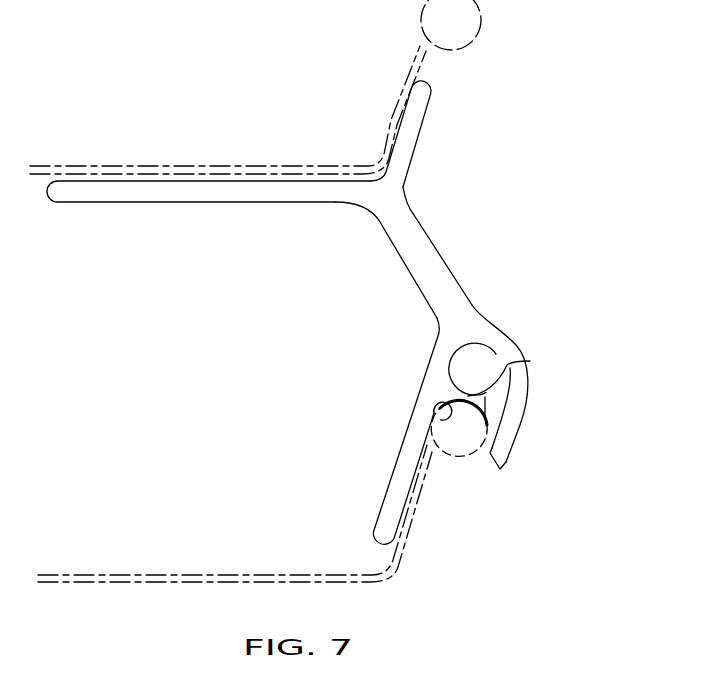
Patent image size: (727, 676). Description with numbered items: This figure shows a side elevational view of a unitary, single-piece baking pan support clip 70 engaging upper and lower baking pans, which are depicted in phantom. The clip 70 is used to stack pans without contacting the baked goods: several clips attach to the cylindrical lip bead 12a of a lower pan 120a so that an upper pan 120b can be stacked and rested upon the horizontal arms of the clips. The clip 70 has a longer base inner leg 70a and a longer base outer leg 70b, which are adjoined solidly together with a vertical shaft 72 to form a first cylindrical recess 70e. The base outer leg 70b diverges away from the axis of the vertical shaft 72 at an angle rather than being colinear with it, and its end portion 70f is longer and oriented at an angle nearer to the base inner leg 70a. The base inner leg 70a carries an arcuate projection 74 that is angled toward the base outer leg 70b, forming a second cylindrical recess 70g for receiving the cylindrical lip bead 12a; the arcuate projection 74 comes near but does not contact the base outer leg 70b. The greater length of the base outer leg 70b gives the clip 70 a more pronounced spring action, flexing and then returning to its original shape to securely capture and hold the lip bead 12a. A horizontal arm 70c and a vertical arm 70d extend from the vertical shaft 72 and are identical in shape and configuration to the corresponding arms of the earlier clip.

The cylindrical lip bead 12a is at (479, 25).
The lower pan 120a is at (235, 513).
The upper pan 120b is at (228, 110).
The clip 70 is at (327, 312).
The vertical shaft 72 is at (437, 248).
The base inner leg 70a is at (391, 482).
The base outer leg 70b is at (530, 386).
The horizontal arm 70c is at (128, 202).
The vertical arm 70d is at (417, 139).
The first cylindrical recess 70e is at (498, 355).
The end portion 70f is at (503, 453).
The second cylindrical recess 70g is at (450, 418).
The arcuate projection 74 is at (530, 361).